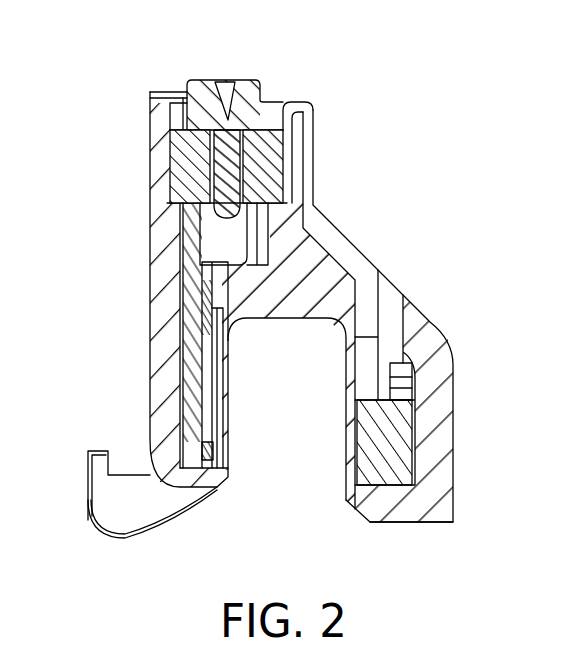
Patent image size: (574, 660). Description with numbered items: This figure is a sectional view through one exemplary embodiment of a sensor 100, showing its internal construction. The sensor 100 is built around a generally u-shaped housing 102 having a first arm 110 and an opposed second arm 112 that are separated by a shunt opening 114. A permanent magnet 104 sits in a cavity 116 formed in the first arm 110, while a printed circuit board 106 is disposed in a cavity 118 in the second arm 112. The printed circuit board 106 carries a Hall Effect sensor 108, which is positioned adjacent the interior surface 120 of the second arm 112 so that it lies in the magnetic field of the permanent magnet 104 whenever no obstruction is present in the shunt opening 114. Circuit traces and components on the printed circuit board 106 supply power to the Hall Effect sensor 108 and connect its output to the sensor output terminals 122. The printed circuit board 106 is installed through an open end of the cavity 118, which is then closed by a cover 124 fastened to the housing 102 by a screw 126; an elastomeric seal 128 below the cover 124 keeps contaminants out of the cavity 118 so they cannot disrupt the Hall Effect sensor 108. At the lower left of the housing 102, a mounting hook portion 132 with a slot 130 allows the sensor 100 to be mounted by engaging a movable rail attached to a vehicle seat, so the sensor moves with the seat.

The sensor 100 is at (278, 303).
The housing 102 is at (362, 247).
The permanent magnet 104 is at (412, 412).
The printed circuit board 106 is at (181, 282).
The Hall Effect sensor 108 is at (223, 489).
The first arm 110 is at (458, 470).
The second arm 112 is at (142, 400).
The shunt opening 114 is at (291, 450).
The cavity 116 is at (416, 485).
The cavity 118 is at (184, 355).
The interior surface 120 is at (226, 368).
The sensor output terminals 122 is at (245, 238).
The cover 124 is at (190, 100).
The screw 126 is at (263, 88).
The elastomeric seal 128 is at (285, 144).
The slot 130 is at (124, 456).
The mounting hook portion 132 is at (88, 520).